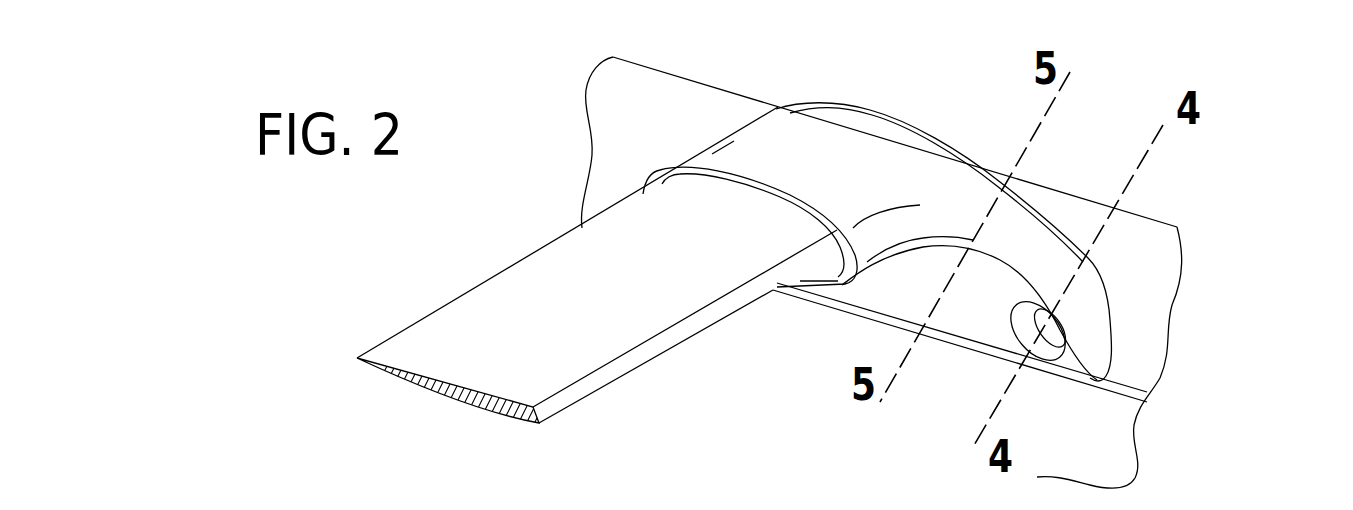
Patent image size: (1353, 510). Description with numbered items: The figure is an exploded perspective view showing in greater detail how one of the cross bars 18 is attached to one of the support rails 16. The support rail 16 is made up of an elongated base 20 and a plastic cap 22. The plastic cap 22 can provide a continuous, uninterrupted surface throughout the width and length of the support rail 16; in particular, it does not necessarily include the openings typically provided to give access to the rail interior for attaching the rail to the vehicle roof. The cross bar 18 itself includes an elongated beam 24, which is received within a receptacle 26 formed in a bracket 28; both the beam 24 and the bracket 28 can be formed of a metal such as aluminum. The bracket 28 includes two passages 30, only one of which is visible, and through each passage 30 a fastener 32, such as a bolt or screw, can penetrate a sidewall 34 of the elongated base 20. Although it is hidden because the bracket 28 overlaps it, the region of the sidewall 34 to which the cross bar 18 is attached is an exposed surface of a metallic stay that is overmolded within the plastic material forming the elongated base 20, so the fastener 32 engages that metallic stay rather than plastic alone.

The support rail 16 is at (1153, 247).
The cross bar 18 is at (558, 268).
The elongated base 20 is at (1153, 325).
The plastic cap 22 is at (679, 44).
The elongated beam 24 is at (467, 313).
The receptacle 26 is at (780, 188).
The bracket 28 is at (862, 163).
The passage 30 is at (1023, 327).
The fastener 32 is at (1048, 360).
The sidewall 34 is at (659, 137).